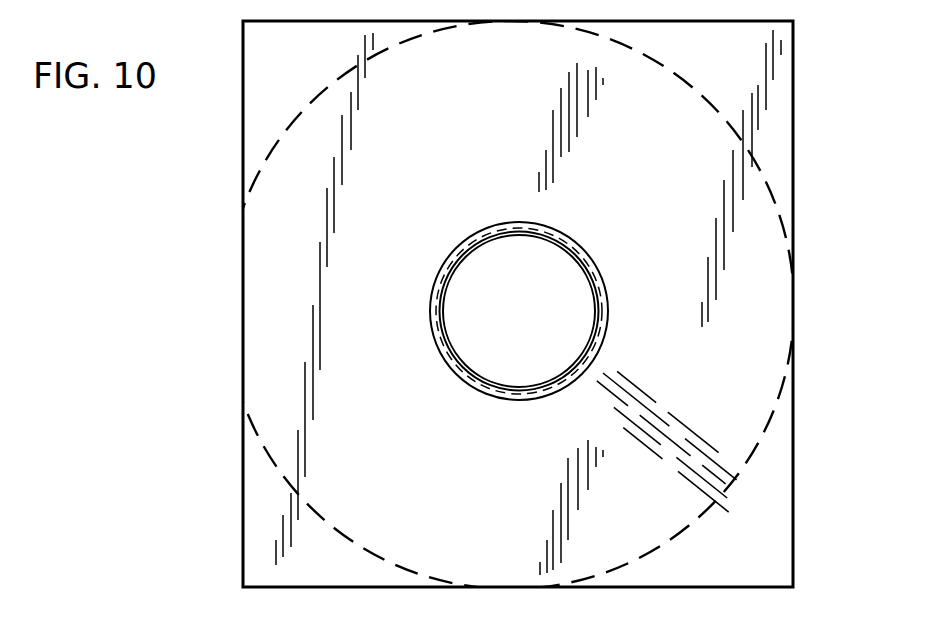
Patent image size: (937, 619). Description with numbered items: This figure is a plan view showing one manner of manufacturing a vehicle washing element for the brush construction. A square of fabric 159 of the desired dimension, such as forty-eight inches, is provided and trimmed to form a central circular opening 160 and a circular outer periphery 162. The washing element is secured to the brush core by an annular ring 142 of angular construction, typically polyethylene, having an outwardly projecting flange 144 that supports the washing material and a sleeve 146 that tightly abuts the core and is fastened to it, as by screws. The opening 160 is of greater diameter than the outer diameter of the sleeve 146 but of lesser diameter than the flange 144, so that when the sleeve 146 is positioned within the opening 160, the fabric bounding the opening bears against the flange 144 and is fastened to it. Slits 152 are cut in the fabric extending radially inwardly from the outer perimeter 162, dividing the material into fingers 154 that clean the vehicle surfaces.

The annular ring 142 is at (560, 311).
The flange portion 144 is at (605, 289).
The sleeve portion 146 is at (597, 352).
The slits 152 is at (684, 434).
The fingers 154 is at (713, 458).
The square of fabric 159 is at (793, 74).
The central circular opening 160 is at (498, 232).
The circular outer periphery 162 is at (722, 109).